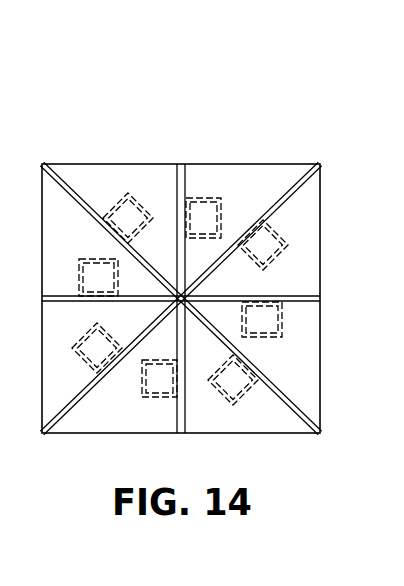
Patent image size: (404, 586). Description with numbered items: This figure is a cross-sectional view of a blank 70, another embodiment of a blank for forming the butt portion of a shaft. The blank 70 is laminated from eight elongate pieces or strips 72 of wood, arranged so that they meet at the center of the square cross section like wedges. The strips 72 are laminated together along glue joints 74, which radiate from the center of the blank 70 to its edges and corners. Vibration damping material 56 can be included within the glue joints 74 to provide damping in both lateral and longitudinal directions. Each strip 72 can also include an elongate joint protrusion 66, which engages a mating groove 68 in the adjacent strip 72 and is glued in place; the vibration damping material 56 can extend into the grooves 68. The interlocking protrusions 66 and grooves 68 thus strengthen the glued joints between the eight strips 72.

The blank 70 is at (149, 131).
The strips 72 is at (232, 188).
The vibration damping material 56 is at (290, 197).
The glue joints 74 is at (280, 207).
The joint protrusions 66 is at (262, 318).
The grooves 68 is at (265, 338).